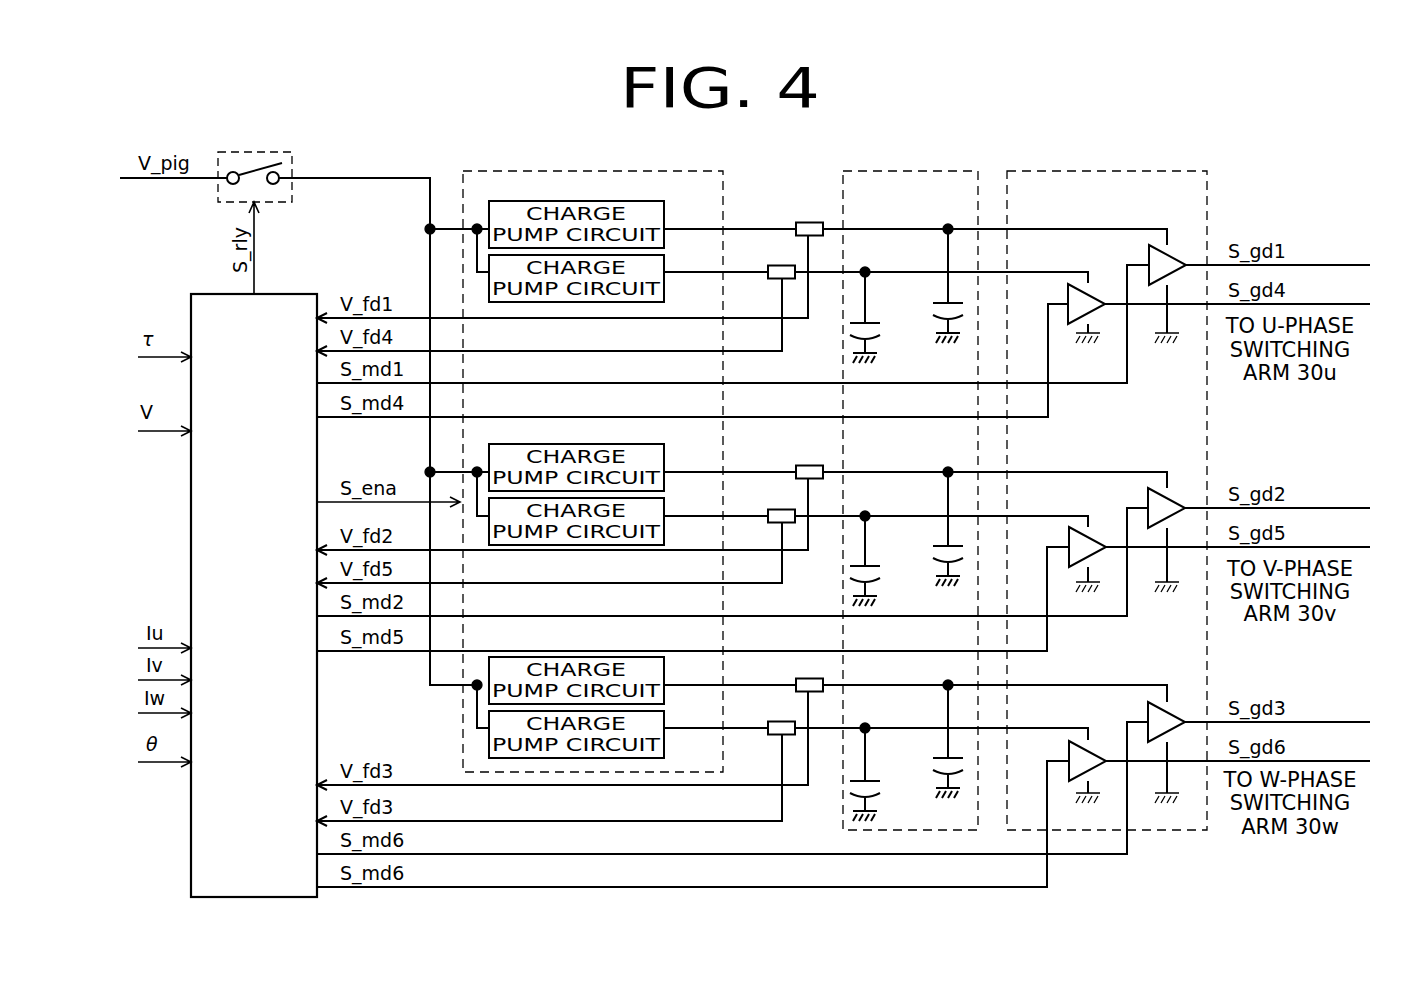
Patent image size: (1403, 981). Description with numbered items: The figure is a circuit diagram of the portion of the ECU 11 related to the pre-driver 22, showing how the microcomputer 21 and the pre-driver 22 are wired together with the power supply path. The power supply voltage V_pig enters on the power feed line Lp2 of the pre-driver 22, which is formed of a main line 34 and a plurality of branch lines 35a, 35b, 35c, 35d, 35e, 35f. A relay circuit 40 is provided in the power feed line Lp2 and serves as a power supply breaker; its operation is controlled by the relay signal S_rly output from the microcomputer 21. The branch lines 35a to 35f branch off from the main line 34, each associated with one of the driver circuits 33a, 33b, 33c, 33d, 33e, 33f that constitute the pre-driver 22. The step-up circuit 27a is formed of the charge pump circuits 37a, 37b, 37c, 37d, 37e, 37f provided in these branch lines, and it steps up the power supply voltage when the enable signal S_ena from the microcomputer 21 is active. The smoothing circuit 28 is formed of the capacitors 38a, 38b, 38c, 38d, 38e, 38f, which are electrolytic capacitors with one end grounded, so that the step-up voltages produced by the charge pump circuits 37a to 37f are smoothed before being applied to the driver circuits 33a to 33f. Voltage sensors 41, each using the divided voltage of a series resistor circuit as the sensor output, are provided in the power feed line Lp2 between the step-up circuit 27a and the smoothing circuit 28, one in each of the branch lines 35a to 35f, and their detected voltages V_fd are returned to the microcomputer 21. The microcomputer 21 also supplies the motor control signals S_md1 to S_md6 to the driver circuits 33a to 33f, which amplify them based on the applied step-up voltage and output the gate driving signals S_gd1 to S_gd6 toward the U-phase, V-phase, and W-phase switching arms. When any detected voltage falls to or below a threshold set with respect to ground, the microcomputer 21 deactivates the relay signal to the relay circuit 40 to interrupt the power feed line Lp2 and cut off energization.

The ECU 11 is at (1332, 173).
The microcomputer 21 is at (290, 294).
The pre-driver 22 is at (1138, 171).
The step-up circuit 27a is at (648, 171).
The smoothing circuit 28 is at (906, 171).
The driver circuit 33a is at (1172, 247).
The driver circuit 33b is at (1172, 490).
The driver circuit 33c is at (1172, 703).
The driver circuit 33d is at (1100, 292).
The driver circuit 33e is at (1100, 535).
The driver circuit 33f is at (1100, 748).
The main line 34 is at (426, 211).
The branch line 35a is at (1026, 229).
The branch line 35b is at (1026, 472).
The branch line 35c is at (1030, 685).
The branch line 35d is at (1010, 272).
The branch line 35e is at (1010, 516).
The branch line 35f is at (1010, 728).
The charge pump circuit 37a is at (661, 222).
The charge pump circuit 37b is at (661, 465).
The charge pump circuit 37c is at (661, 697).
The charge pump circuit 37d is at (661, 274).
The charge pump circuit 37e is at (661, 517).
The charge pump circuit 37f is at (661, 739).
The capacitor 38a is at (940, 305).
The capacitor 38b is at (940, 548).
The capacitor 38c is at (940, 760).
The capacitor 38d is at (880, 336).
The capacitor 38e is at (880, 579).
The capacitor 38f is at (880, 795).
The relay circuit 40 is at (295, 170).
The voltage sensor 41 is at (782, 265).
The power feed line Lp2 is at (368, 178).